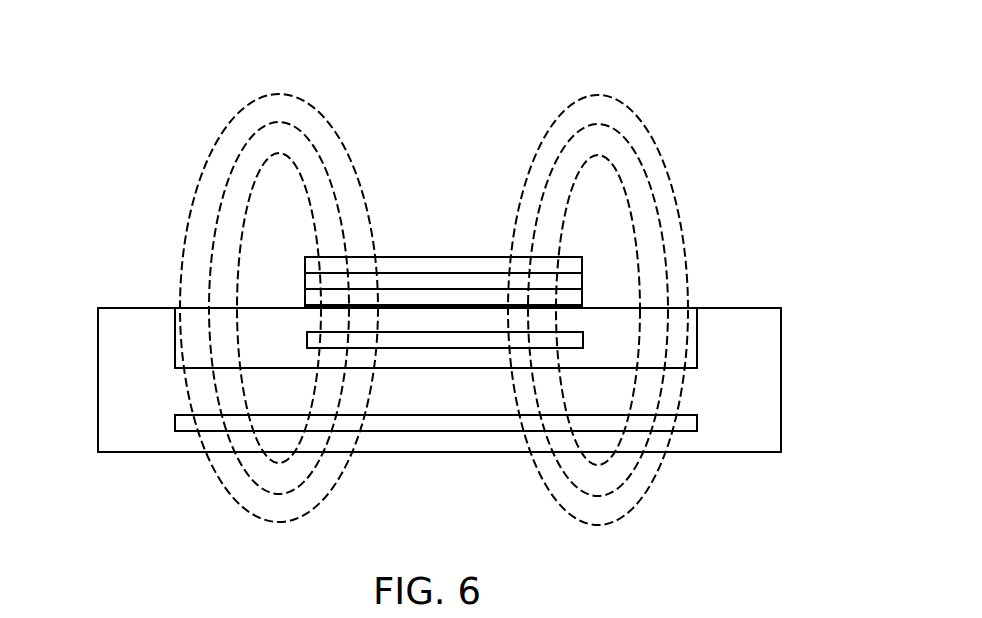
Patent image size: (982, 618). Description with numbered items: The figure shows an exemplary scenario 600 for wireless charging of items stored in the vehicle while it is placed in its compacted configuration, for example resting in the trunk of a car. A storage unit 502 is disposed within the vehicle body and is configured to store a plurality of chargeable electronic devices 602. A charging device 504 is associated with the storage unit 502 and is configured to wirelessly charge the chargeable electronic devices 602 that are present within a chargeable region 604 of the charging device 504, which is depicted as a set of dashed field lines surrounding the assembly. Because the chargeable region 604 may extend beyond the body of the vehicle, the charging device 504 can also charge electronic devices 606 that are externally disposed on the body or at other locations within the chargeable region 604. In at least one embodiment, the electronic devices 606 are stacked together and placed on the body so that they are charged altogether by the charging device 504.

The exemplary scenario 600 is at (113, 85).
The storage unit 502 is at (600, 368).
The charging device 504 is at (400, 424).
The chargeable electronic devices 602 is at (458, 340).
The chargeable region 604 is at (248, 120).
The electronic devices 606 is at (440, 262).